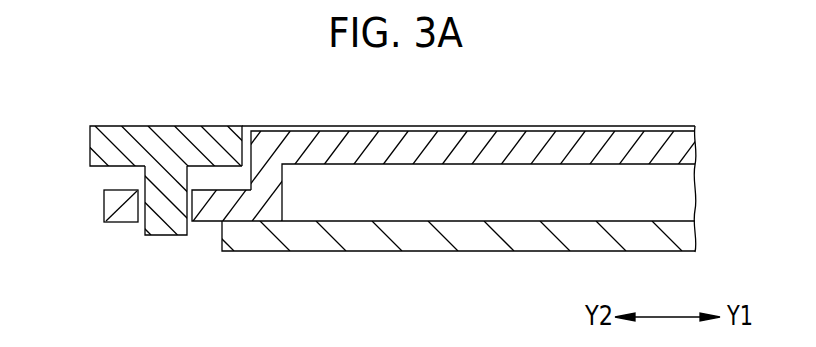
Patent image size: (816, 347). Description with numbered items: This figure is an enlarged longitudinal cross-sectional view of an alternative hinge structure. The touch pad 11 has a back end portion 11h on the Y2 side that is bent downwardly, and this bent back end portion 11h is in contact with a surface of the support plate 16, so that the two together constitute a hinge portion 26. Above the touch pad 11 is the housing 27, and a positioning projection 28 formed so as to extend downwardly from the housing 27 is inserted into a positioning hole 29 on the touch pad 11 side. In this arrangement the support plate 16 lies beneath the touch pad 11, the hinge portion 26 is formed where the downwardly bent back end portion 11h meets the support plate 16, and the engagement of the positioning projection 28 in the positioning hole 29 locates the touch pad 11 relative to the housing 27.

The housing 27 is at (102, 147).
The positioning projection 28 is at (155, 180).
The positioning hole 29 is at (193, 207).
The touch pad 11 is at (517, 155).
The back end portion 11h is at (205, 215).
The hinge portion 26 is at (283, 219).
The support plate 16 is at (642, 227).